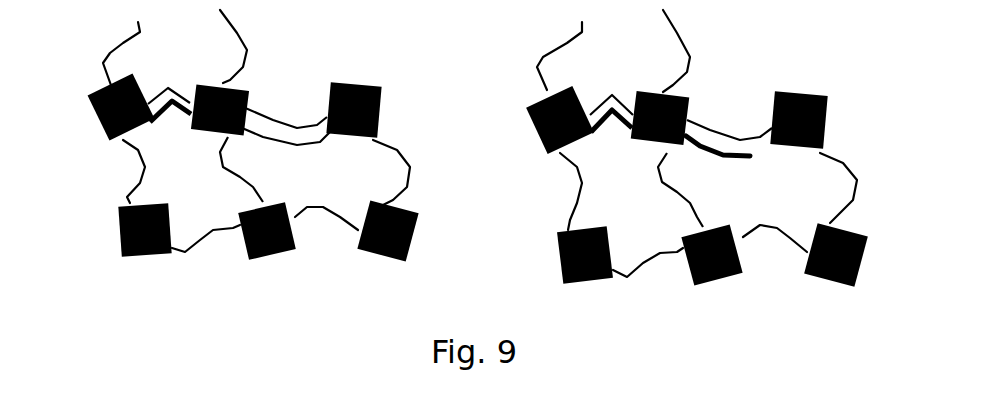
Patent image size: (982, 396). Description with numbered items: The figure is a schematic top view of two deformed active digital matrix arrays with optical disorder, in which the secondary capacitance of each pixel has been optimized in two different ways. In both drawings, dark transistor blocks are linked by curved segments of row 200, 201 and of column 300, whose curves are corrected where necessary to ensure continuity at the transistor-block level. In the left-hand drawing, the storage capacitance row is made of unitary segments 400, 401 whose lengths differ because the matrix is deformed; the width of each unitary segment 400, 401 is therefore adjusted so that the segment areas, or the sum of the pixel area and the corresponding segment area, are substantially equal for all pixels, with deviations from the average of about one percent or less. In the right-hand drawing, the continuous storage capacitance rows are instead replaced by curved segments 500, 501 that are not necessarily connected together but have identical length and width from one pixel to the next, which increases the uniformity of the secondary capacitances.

The row 200 is at (270, 118).
The row 201 is at (172, 88).
The column 300 is at (255, 196).
The unitary segment 400 is at (280, 144).
The unitary segment 401 is at (173, 112).
The curved segment 500 is at (733, 160).
The curved segment 501 is at (607, 130).